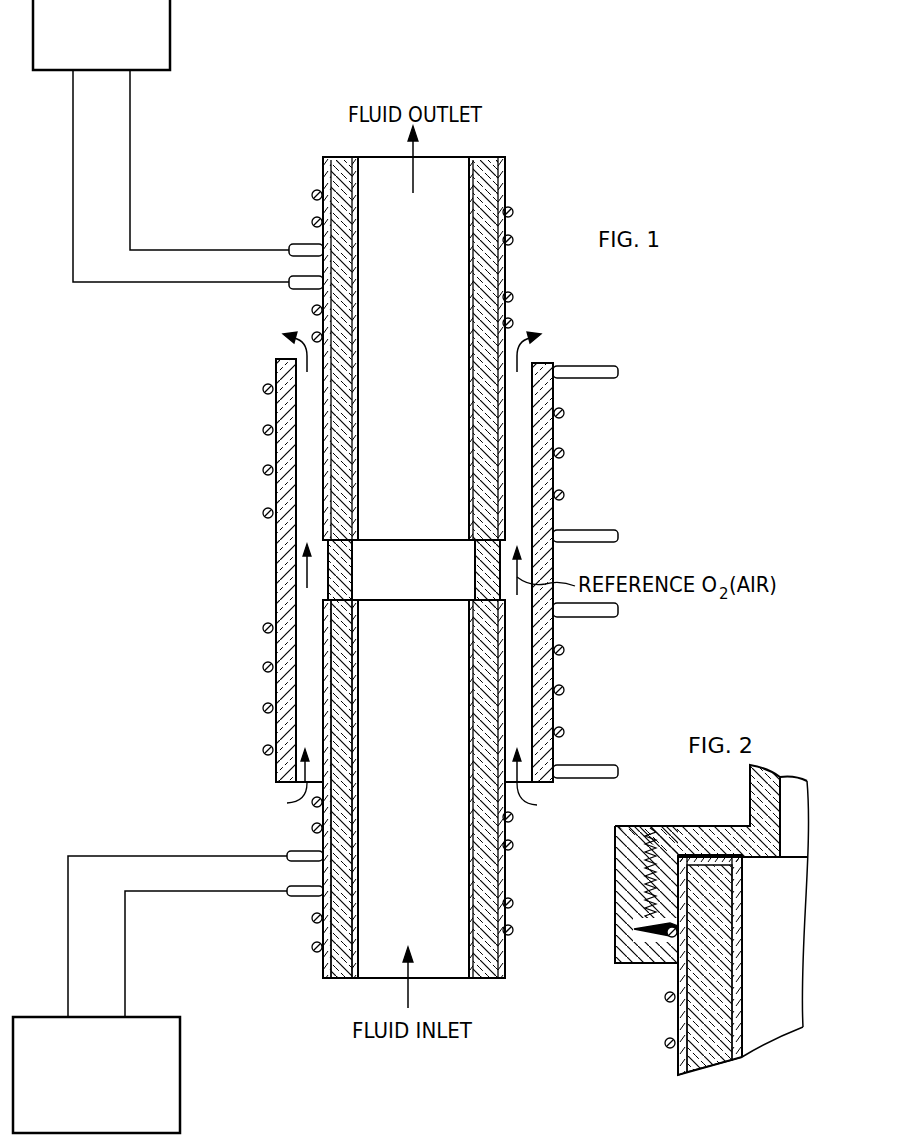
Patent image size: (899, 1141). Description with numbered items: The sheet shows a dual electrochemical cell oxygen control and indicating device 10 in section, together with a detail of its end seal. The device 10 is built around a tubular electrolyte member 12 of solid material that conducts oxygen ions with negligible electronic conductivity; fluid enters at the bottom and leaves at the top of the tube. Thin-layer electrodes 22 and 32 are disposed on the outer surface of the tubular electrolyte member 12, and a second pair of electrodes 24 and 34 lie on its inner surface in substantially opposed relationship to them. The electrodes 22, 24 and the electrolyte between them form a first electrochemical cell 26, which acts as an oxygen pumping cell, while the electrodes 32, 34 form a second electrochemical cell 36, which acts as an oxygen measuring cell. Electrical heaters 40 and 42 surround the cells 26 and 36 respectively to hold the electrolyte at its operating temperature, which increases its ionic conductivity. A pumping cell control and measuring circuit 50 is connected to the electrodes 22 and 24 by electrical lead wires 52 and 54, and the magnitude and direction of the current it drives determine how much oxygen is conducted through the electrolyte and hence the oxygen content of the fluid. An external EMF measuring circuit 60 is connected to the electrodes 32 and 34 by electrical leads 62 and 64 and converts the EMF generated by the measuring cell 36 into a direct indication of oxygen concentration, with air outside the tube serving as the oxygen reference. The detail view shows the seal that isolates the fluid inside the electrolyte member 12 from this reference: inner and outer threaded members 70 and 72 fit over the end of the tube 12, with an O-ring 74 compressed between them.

In FIG. 1, the dual electrochemical cell oxygen control and indicating device 10 is at (208, 520).
In FIG. 1, the tubular electrolyte member 12 is at (337, 588).
In FIG. 2, the tubular electrolyte member 12 is at (702, 1070).
In FIG. 1, the electrode 22 is at (325, 676).
In FIG. 1, the electrode 24 is at (353, 637).
In FIG. 1, the first electrochemical cell 26 is at (426, 707).
In FIG. 1, the electrode 32 is at (278, 581).
In FIG. 1, the electrode 34 is at (270, 357).
In FIG. 2, the electrode 34 is at (745, 1045).
In FIG. 1, the second electrochemical cell 36 is at (428, 344).
In FIG. 1, the electrical heater 40 is at (263, 750).
In FIG. 1, the electrical heater 42 is at (265, 467).
In FIG. 1, the pumping cell control and measuring circuit 50 is at (180, 1091).
In FIG. 1, the electrical lead wire 52 is at (295, 862).
In FIG. 1, the electrical lead wire 54 is at (295, 896).
In FIG. 1, the EMF measuring circuit 60 is at (172, 54).
In FIG. 1, the electrical lead 62 is at (306, 289).
In FIG. 1, the electrical lead 64 is at (304, 243).
In FIG. 2, the electrical lead 64 is at (667, 1001).
In FIG. 2, the inner threaded member 70 is at (720, 826).
In FIG. 2, the outer threaded member 72 is at (615, 862).
In FIG. 2, the O-ring 74 is at (668, 955).